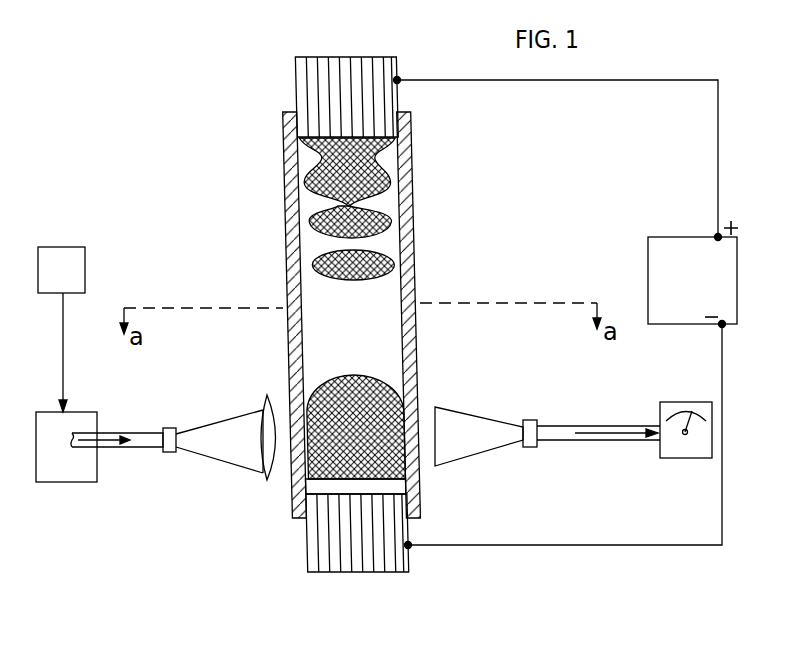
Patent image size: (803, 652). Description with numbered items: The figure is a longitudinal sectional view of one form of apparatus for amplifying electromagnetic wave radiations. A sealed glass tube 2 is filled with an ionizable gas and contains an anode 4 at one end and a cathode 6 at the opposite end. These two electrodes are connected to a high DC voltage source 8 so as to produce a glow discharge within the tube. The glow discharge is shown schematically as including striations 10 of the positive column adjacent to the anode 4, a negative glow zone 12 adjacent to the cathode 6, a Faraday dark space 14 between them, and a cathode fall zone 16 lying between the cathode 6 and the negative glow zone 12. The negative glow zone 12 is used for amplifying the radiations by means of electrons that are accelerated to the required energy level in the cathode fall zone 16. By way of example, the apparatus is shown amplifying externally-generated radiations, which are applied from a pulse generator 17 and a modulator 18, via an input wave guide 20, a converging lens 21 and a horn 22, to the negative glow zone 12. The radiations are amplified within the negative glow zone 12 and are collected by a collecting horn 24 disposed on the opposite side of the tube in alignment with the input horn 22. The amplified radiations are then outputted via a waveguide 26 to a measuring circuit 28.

The sealed glass tube 2 is at (411, 158).
The anode 4 is at (368, 57).
The cathode 6 is at (380, 560).
The high DC voltage source 8 is at (700, 243).
The striations of the positive column 10 is at (392, 182).
The negative glow zone 12 is at (320, 412).
The Faraday dark space 14 is at (387, 360).
The cathode fall zone 16 is at (395, 486).
The pulse generator 17 is at (76, 254).
The modulator 18 is at (61, 482).
The input wave guide 20 is at (140, 447).
The converging lens 21 is at (268, 478).
The horn 22 is at (216, 452).
The collecting horn 24 is at (457, 418).
The waveguide 26 is at (572, 426).
The measuring circuit 28 is at (669, 402).